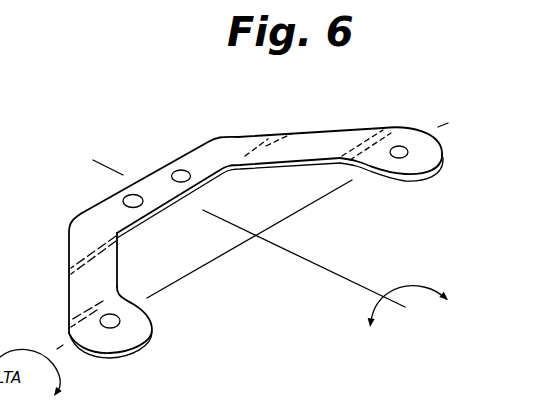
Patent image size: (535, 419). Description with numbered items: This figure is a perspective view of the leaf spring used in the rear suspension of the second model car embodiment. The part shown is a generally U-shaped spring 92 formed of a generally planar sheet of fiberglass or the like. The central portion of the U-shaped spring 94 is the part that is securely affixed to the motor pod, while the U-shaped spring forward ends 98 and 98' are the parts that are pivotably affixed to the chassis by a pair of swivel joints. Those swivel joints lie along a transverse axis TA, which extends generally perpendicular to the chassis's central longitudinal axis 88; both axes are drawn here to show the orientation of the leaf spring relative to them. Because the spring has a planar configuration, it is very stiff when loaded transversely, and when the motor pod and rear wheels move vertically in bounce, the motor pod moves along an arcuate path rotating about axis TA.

The central longitudinal axis 88 is at (298, 253).
The U-shaped spring 92 is at (56, 272).
The central portion of the U-shaped spring 94 is at (155, 173).
The U-shaped spring forward end 98 is at (116, 349).
The U-shaped spring forward end 98' is at (391, 122).